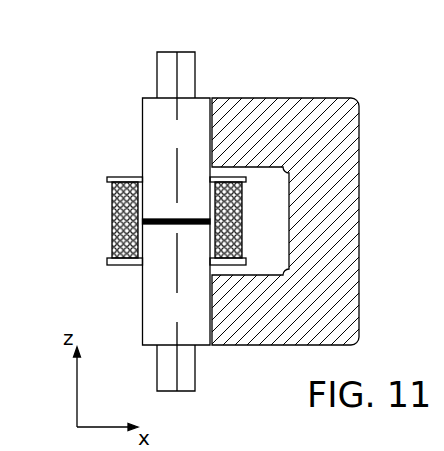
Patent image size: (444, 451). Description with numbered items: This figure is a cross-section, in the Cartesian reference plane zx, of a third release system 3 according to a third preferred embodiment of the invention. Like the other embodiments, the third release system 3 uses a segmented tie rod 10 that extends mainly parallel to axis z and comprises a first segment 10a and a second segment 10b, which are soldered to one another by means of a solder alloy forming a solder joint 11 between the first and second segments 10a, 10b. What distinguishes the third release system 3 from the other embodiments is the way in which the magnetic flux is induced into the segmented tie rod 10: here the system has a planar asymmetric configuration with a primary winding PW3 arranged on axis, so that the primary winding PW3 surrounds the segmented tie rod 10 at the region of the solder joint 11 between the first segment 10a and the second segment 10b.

The third release system 3 is at (311, 79).
The segmented tie rod 10 is at (150, 243).
The first segment 10a is at (153, 332).
The second segment 10b is at (163, 116).
The primary winding PW3 is at (113, 218).
The solder joint 11 is at (153, 226).